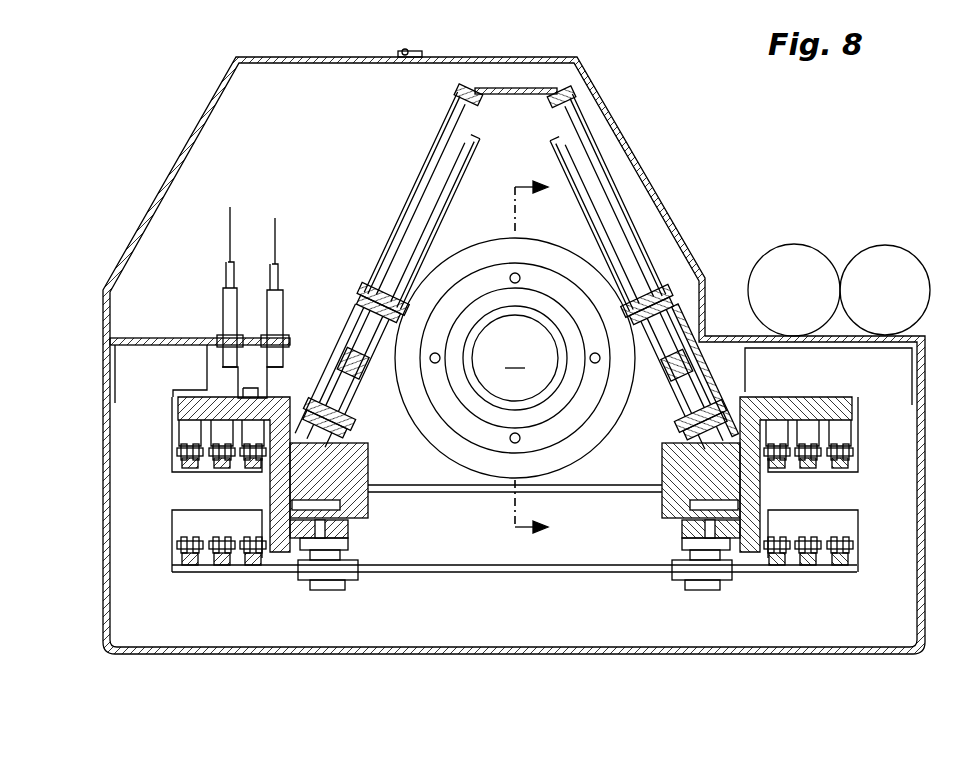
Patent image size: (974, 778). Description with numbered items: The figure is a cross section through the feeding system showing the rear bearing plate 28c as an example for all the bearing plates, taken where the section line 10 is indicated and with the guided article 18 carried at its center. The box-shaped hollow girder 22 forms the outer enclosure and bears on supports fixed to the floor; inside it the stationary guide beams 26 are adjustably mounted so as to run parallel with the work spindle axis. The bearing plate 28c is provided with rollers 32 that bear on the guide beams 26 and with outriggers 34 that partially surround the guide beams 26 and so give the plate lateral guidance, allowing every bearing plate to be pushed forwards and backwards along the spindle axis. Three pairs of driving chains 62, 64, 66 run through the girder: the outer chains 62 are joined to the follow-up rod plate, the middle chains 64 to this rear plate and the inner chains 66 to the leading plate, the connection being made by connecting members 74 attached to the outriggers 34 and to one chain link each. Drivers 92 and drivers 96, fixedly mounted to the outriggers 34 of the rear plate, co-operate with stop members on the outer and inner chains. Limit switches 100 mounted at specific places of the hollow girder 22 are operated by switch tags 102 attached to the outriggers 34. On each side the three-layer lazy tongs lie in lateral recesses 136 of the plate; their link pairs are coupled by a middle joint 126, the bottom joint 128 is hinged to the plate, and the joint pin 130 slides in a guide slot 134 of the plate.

The section line 10 is at (514, 357).
The article / rollers 18 is at (872, 265).
The box-shaped hollow girder 22 is at (525, 654).
The stationary guide beams 26 is at (350, 532).
The rear bearing plate 28c is at (410, 168).
The rollers 32 is at (372, 460).
The outriggers 34 is at (808, 420).
The outer driving chains 62 is at (190, 540).
The middle driving chains 64 is at (222, 540).
The inner driving chains 66 is at (253, 540).
The connecting members 74 is at (210, 428).
The drivers 92 is at (838, 432).
The drivers 96 is at (772, 420).
The limit switches 100 is at (272, 296).
The switch tags 102 is at (283, 372).
The middle joint 126 is at (657, 370).
The bottom joint 128 is at (722, 413).
The joint pin 130 is at (684, 283).
The guide slot 134 is at (625, 230).
The lateral recesses 136 is at (585, 180).